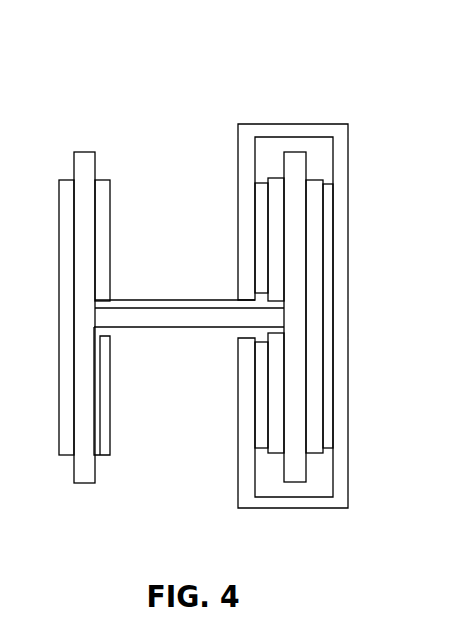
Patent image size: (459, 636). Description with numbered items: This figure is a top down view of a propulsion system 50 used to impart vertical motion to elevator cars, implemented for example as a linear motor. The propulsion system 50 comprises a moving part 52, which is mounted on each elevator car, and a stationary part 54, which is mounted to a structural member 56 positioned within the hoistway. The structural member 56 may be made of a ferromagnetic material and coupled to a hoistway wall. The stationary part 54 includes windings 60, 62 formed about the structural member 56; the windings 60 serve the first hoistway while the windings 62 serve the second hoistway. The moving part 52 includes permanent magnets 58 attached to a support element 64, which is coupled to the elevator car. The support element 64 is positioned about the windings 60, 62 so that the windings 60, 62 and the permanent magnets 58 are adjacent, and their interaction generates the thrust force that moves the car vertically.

The propulsion system 50 is at (104, 84).
The moving part 52 is at (356, 120).
The stationary part 54 is at (120, 211).
The structural member 56 is at (130, 317).
The permanent magnets 58 is at (262, 255).
The windings 60 is at (277, 210).
The windings 62 is at (100, 380).
The support element 64 is at (342, 393).